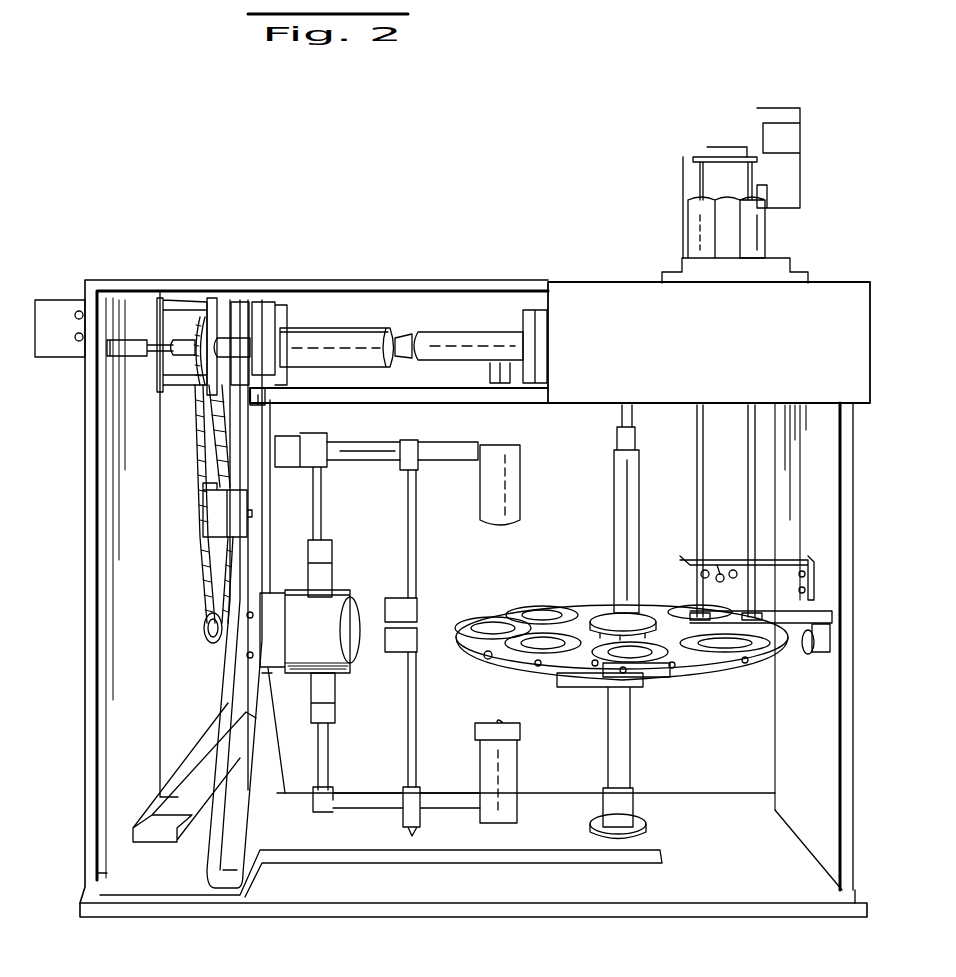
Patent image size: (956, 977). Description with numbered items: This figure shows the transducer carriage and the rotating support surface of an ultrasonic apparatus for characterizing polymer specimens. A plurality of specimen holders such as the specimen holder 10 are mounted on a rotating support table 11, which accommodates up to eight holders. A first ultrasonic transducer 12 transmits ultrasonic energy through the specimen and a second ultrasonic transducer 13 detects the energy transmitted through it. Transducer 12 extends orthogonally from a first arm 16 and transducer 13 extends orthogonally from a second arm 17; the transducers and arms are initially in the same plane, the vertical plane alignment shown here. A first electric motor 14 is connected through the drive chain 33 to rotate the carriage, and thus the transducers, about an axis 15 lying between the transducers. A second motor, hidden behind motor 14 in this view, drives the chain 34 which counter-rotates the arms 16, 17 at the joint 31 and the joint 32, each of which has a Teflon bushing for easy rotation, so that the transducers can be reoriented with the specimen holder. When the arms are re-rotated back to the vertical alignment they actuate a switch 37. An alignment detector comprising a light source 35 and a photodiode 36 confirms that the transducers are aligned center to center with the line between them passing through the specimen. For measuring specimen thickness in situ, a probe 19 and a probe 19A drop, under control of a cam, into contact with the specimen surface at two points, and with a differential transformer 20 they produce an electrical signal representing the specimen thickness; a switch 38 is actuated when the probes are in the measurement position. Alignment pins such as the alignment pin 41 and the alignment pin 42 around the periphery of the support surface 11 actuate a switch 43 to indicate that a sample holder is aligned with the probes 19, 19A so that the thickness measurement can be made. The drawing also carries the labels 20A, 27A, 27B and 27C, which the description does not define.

The specimen holder 10 is at (498, 625).
The rotating support table 11 is at (648, 672).
The first ultrasonic transducer 12 is at (512, 478).
The second ultrasonic transducer 13 is at (513, 760).
The first electric motor 14 is at (370, 335).
The axis 15 is at (186, 630).
The first arm 16 is at (450, 450).
The second arm 17 is at (450, 810).
The probe 19 is at (697, 492).
The probe 19A is at (748, 445).
The differential transformer 20 is at (688, 230).
The solenoid plunger 20A is at (768, 234).
The switch contact 27A is at (700, 576).
The switch contact 27B is at (726, 587).
The switch contact 27C is at (733, 570).
The joint 31 is at (333, 570).
The joint 32 is at (338, 703).
The drive chain 33 is at (204, 442).
The chain 34 is at (214, 552).
The light source 35 is at (400, 598).
The photodiode 36 is at (405, 654).
The switch 37 is at (298, 462).
The switch 38 is at (790, 128).
The alignment pin 41 is at (458, 628).
The alignment pin 42 is at (490, 658).
The switch 43 is at (808, 656).